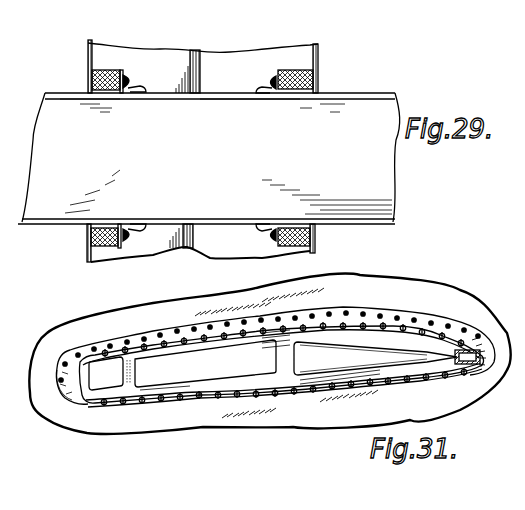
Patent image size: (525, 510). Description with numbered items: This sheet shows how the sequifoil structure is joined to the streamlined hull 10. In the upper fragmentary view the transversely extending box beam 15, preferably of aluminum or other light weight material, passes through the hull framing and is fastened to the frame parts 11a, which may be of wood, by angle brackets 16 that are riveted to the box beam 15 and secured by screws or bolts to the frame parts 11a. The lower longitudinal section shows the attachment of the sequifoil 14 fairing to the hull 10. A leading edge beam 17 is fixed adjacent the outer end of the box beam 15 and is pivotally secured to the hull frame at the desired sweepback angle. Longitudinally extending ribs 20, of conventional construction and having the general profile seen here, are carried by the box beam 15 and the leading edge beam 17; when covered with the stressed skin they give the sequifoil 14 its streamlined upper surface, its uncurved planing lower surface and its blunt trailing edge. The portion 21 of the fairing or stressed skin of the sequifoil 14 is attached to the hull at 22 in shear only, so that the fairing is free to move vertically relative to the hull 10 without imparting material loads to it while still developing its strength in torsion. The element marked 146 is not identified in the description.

In FIG. 29, the streamlined hull 10 is at (316, 47).
In FIG. 31, the streamlined hull 10 is at (436, 297).
In FIG. 29, the frame parts 11a is at (104, 74).
In FIG. 31, the sequifoil 14 is at (313, 395).
In FIG. 29, the box beam 15 is at (230, 113).
In FIG. 31, the box beam 15 is at (215, 383).
In FIG. 29, the angle brackets 16 is at (131, 74).
In FIG. 31, the leading edge beam 17 is at (474, 366).
In FIG. 31, the longitudinally extending ribs 20 is at (356, 333).
In FIG. 31, the portion of fairing 21 is at (343, 323).
In FIG. 31, the shear attachment 22 is at (121, 341).
In FIG. 31, the rounded end portion 146 is at (70, 390).